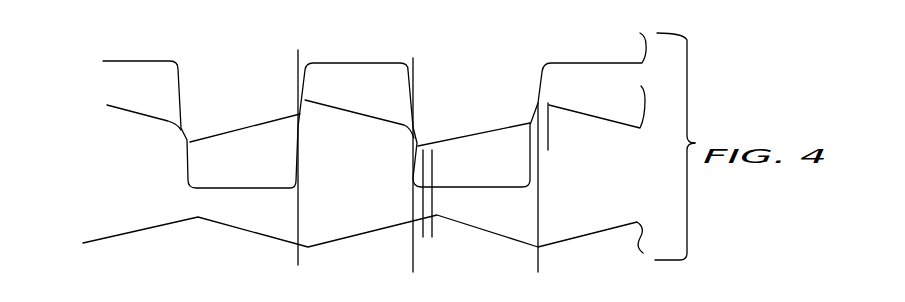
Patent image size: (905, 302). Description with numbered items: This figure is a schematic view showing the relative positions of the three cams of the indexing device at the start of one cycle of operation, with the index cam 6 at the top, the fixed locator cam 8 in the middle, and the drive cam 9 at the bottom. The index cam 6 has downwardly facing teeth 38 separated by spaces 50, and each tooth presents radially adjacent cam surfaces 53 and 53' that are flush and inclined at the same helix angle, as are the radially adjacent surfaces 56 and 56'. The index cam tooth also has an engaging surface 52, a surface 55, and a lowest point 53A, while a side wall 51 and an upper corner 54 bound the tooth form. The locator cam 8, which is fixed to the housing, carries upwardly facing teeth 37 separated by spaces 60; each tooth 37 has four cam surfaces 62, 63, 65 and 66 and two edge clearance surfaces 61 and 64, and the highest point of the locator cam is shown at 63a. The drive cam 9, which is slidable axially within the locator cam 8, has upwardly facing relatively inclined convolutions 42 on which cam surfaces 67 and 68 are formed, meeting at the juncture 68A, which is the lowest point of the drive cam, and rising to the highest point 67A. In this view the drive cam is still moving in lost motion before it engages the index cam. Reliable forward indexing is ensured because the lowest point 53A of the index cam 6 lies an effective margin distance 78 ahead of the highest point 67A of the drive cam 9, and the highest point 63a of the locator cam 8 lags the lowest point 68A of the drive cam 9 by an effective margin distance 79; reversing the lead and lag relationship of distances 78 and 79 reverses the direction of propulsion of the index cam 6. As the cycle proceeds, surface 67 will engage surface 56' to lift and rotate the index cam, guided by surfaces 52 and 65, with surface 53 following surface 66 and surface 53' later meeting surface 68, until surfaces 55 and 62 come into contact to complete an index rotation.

The index cam 6 is at (658, 53).
The locator cam 8 is at (658, 107).
The drive cam 9 is at (648, 235).
The teeth 37 is at (168, 174).
The teeth 38 is at (213, 70).
The convolutions 42 is at (199, 216).
The spaces 50 is at (368, 98).
The plate side wall 51 is at (178, 88).
The engaging surface 52 is at (188, 133).
The index cam surface 53 is at (214, 121).
The index cam surface 53' is at (474, 123).
The lowest point 53A is at (183, 153).
The upper corner 54 is at (297, 70).
The surface 55 is at (299, 110).
The index cam surface 56 is at (249, 100).
The index cam surface 56' is at (488, 156).
The spaces 60 is at (257, 172).
The edge clearance surface 61 is at (297, 171).
The cam surface 62 is at (302, 130).
The cam surface 63 is at (310, 104).
The highest point 63a is at (547, 102).
The edge clearance surface 64 is at (410, 170).
The cam surface 65 is at (410, 150).
The cam surface 66 is at (360, 118).
The cam surface 67 is at (347, 237).
The highest point 67A is at (198, 220).
The cam surface 68 is at (272, 237).
The juncture 68A is at (538, 247).
The margin distance 78 is at (460, 205).
The margin distance 79 is at (510, 146).